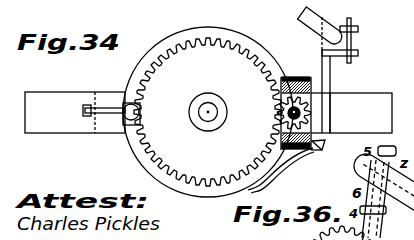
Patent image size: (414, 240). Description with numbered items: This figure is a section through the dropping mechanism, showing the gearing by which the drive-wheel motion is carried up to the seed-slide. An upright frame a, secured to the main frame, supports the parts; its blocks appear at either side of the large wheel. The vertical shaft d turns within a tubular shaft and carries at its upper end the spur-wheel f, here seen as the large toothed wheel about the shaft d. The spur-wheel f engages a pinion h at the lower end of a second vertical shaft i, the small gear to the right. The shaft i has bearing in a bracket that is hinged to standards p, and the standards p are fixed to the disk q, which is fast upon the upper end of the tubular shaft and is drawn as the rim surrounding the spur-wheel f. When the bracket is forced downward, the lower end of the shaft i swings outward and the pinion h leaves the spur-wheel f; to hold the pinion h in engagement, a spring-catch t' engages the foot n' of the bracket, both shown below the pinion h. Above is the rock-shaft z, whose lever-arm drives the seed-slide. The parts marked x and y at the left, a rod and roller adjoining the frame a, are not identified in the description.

The upright frame a is at (208, 112).
The push rod x is at (104, 104).
The roller bracket y is at (123, 118).
The disk q is at (208, 103).
The spur-wheel f is at (208, 112).
The vertical shaft d is at (214, 106).
The pinion h is at (279, 113).
The vertical shaft i is at (309, 112).
The standards p is at (281, 126).
The foot of the bracket n' is at (324, 142).
The spring-catch t' is at (321, 156).
The rock-shaft z is at (328, 66).